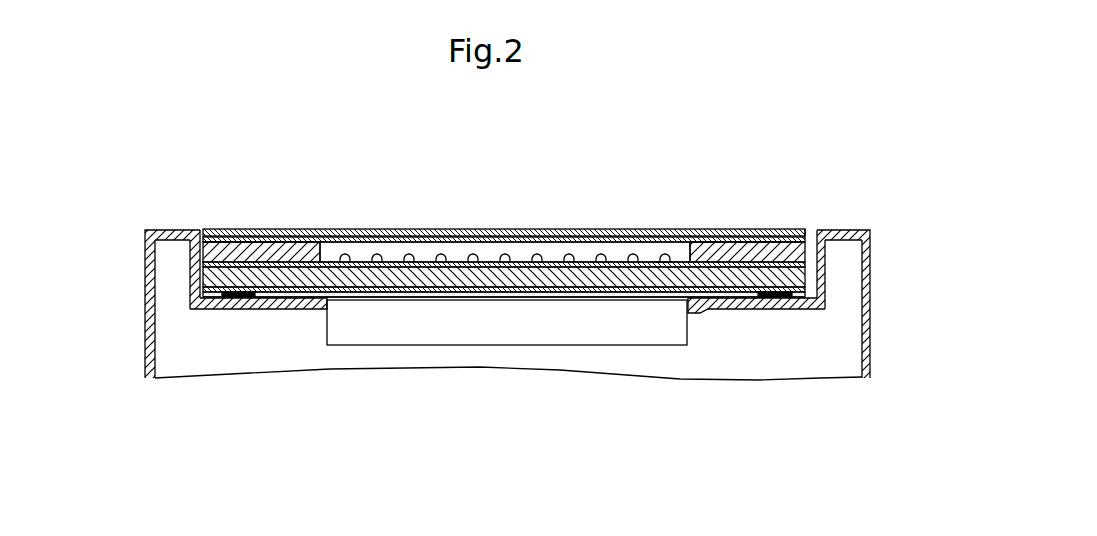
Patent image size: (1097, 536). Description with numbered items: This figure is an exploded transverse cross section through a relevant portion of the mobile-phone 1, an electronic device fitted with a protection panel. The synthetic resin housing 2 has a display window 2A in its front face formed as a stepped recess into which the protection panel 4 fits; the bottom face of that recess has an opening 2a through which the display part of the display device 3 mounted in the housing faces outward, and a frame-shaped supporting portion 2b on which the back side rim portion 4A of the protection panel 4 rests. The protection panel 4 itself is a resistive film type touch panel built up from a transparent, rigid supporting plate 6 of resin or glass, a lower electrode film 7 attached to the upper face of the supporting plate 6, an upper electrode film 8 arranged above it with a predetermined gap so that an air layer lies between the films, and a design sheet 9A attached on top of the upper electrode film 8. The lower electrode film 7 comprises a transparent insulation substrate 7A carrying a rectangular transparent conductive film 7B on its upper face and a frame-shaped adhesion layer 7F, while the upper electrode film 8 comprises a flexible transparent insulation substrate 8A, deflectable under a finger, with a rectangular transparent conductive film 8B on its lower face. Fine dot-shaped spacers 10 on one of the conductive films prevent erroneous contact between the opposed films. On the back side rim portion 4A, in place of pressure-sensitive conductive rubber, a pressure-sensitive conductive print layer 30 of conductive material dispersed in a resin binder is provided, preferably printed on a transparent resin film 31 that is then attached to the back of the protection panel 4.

The mobile-phone 1 is at (228, 140).
The housing 2 is at (838, 228).
The display window 2A is at (200, 227).
The opening 2a is at (333, 302).
The supporting portion 2b is at (235, 310).
The display device 3 is at (573, 325).
The protection panel 4 is at (398, 222).
The back side rim portion 4A is at (270, 297).
The supporting plate 6 is at (548, 290).
The lower electrode film 7 is at (488, 278).
The transparent insulation substrate 7A is at (283, 260).
The transparent conductive film 7B is at (351, 258).
The adhesion layer 7F is at (246, 243).
The upper electrode film 8 is at (598, 225).
The flexible transparent insulation substrate 8A is at (688, 240).
The transparent conductive film 8B is at (658, 252).
The sensor sheet (9: sensor) 9A is at (450, 231).
The dot-shaped spacer 10 is at (572, 257).
The pressure-sensitive conductive print layer 30 is at (225, 291).
The transparent resin film 31 is at (388, 296).